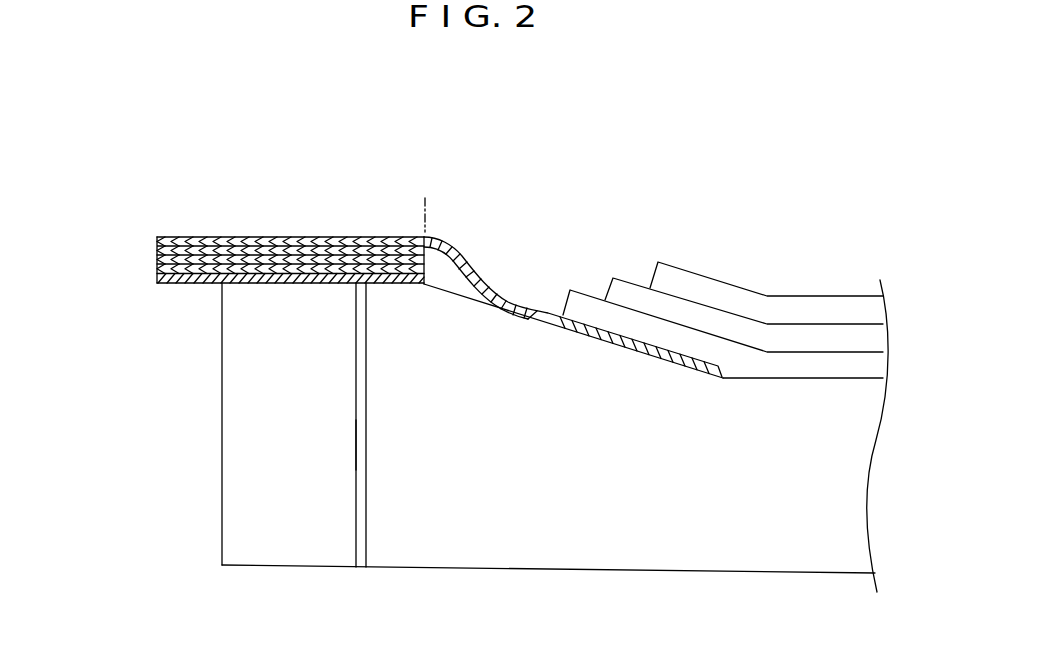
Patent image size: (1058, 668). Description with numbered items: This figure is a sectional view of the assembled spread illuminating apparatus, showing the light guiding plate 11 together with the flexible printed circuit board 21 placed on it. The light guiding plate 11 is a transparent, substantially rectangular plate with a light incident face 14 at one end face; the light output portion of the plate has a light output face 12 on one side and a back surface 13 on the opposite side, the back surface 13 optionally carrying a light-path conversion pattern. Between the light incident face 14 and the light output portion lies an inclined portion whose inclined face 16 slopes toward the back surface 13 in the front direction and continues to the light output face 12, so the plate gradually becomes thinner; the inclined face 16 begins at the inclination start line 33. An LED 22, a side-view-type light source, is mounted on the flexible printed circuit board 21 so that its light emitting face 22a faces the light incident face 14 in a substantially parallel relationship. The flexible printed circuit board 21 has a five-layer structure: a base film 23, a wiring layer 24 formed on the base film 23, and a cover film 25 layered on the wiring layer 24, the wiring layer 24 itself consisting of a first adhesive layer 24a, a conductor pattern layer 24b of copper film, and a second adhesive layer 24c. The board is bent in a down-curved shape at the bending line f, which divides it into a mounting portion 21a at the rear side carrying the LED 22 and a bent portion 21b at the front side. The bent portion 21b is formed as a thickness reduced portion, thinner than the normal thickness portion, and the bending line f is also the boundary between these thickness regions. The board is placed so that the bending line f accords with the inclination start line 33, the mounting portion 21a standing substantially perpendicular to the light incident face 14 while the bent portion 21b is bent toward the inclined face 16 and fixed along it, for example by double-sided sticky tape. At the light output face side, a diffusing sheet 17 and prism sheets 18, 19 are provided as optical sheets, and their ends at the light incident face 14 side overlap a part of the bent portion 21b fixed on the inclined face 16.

The light guiding plate 11 is at (881, 466).
The light output face 12 is at (860, 378).
The back surface 13 is at (793, 574).
The light incident face 14 is at (367, 535).
The inclined face 16 is at (497, 281).
The diffusing sheet 17 is at (587, 303).
The prism sheet 18 is at (631, 288).
The prism sheet 19 is at (681, 276).
The flexible printed circuit board 21 is at (382, 270).
The mounting portion 21a is at (298, 237).
The bent portion 21b is at (470, 260).
The LED 22 is at (235, 400).
The light emitting face 22a is at (355, 443).
The base film 23 is at (157, 278).
The wiring layer 24 is at (233, 258).
The first adhesive layer 24a is at (257, 283).
The conductor pattern layer 24b is at (157, 259).
The second adhesive layer 24c is at (157, 249).
The cover film 25 is at (157, 239).
The inclination start line 33 is at (422, 288).
The bending line f is at (425, 210).